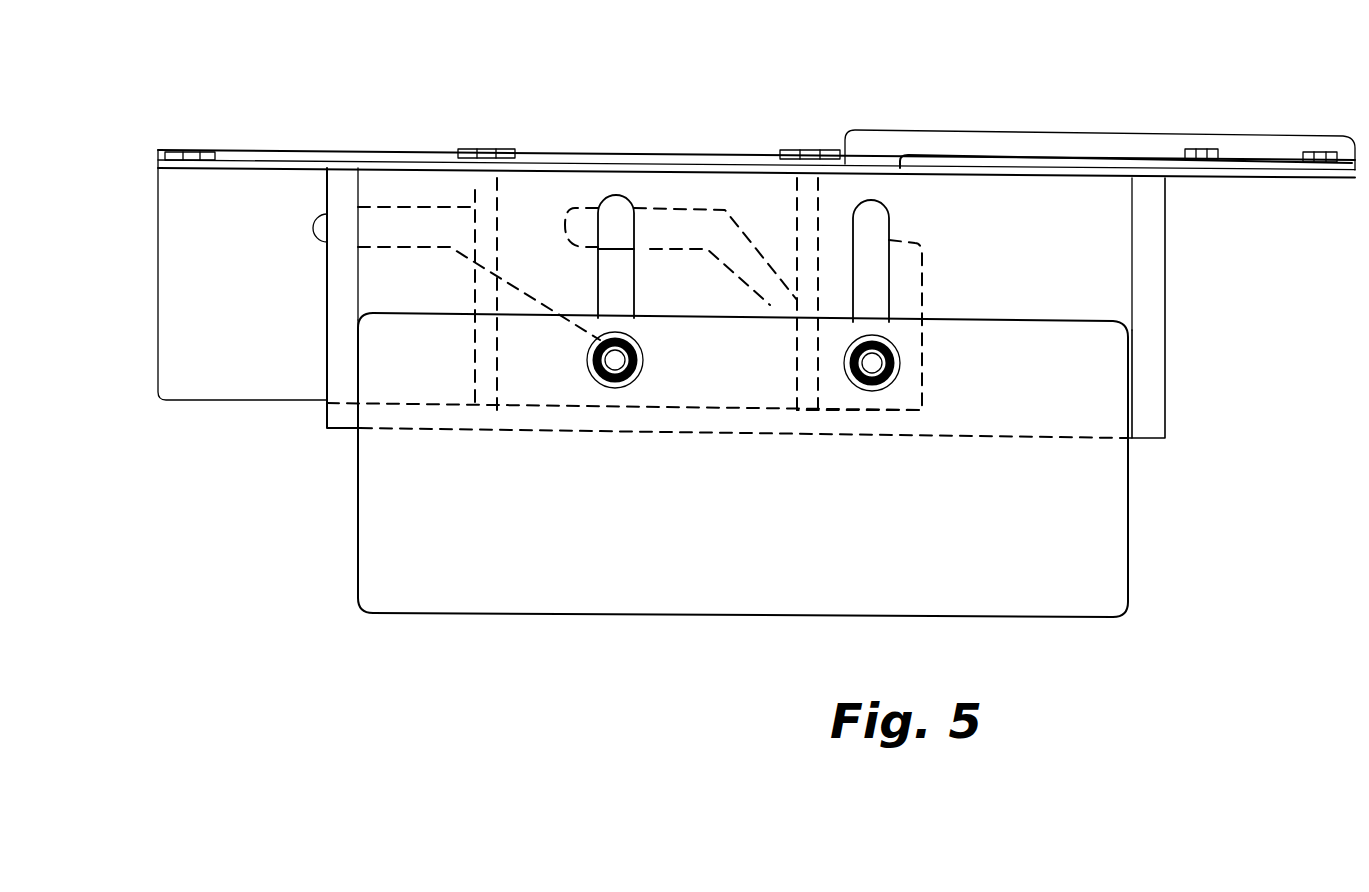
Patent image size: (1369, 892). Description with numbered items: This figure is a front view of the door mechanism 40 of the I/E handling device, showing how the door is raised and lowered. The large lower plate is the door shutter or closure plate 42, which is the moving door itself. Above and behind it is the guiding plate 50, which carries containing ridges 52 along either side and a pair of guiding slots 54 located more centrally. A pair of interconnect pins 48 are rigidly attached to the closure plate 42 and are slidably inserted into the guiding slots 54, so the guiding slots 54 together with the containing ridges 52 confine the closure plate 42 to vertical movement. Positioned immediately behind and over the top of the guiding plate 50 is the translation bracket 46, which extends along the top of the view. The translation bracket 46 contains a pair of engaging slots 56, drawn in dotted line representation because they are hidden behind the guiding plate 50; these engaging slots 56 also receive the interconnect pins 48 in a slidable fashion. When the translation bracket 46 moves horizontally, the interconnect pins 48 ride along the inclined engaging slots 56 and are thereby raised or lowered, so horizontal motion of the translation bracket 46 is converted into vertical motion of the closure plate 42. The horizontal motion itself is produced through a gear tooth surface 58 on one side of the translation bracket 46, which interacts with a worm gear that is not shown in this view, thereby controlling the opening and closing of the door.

The door mechanism 40 is at (299, 118).
The door shutter or closure plate 42 is at (520, 585).
The translation bracket 46 is at (571, 165).
The interconnecting pin 48 is at (612, 365).
The guiding plate 50 is at (1067, 273).
The containing ridges 52 is at (1150, 400).
The guiding slots 54 is at (616, 200).
The engaging slots 56 is at (396, 225).
The gear tooth surface 58 is at (1023, 157).